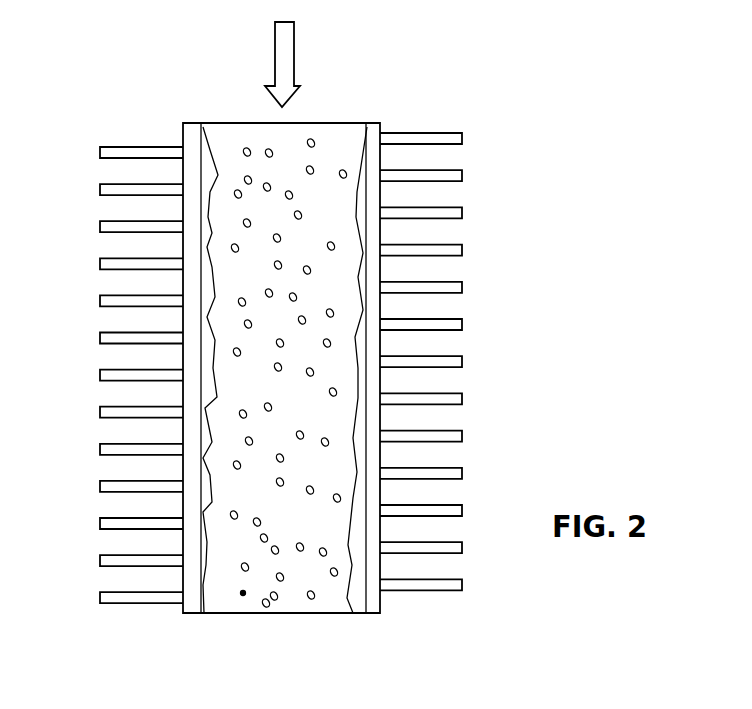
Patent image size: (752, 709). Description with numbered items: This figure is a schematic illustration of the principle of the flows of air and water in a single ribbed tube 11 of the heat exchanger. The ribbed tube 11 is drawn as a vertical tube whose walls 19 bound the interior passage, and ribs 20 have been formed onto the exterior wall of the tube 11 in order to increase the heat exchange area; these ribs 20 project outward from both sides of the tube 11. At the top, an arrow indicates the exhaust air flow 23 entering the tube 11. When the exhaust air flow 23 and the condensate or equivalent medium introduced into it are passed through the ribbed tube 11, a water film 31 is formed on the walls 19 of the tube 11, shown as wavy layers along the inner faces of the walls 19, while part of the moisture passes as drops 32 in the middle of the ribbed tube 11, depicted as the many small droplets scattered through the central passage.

The ribbed tube 11 is at (402, 95).
The walls of the tube 19 is at (371, 600).
The ribs 20 is at (458, 141).
The exhaust air flow 23 is at (281, 88).
The water film 31 is at (355, 440).
The drops 32 is at (280, 578).